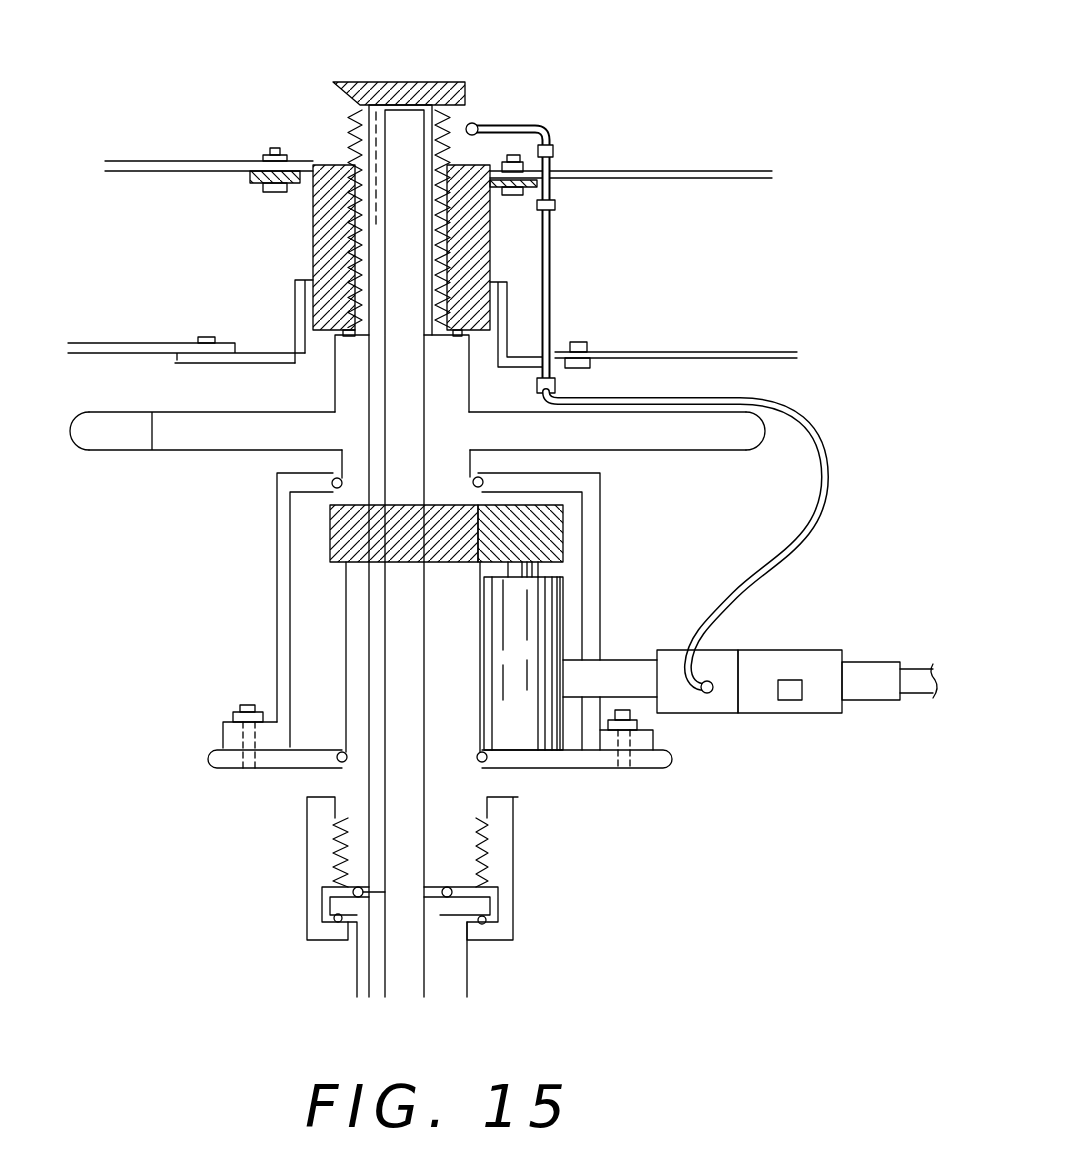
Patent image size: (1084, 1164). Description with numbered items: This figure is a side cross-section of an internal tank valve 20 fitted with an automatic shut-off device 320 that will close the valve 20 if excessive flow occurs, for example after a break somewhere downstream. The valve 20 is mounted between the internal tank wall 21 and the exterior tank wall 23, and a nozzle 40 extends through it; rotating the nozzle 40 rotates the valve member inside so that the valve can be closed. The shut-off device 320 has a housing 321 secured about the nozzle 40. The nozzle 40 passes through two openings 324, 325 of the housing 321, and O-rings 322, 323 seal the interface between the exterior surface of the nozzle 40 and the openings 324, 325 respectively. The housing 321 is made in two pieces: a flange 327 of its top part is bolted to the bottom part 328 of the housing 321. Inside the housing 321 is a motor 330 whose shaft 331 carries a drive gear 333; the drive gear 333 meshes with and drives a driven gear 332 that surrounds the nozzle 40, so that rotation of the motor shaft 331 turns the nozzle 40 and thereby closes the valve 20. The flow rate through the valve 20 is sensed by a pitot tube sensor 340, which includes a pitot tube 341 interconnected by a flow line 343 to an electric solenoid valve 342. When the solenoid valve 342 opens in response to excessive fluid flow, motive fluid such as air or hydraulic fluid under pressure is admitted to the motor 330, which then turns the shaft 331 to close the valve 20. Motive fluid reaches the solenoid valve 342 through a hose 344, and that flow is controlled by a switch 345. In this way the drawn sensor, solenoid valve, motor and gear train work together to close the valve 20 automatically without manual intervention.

The internal valve 20 is at (350, 128).
The internal tank wall 21 is at (697, 172).
The exterior tank wall 23 is at (697, 352).
The nozzle 40 is at (390, 605).
The shut-off device 320 is at (322, 660).
The housing 321 is at (277, 550).
The O-ring 322 is at (330, 483).
The O-ring 323 is at (345, 765).
The opening 324 is at (335, 478).
The opening 325 is at (483, 765).
The flange 327 is at (220, 730).
The bottom part 328 is at (275, 770).
The motor 330 is at (537, 620).
The shaft 331 is at (545, 567).
The driven gear 332 is at (330, 543).
The drive gear 333 is at (560, 515).
The pitot tube sensor 340 is at (558, 170).
The pitot tube 341 is at (508, 122).
The electric solenoid valve 342 is at (722, 702).
The flow line 343 is at (558, 283).
The hose 344 is at (867, 662).
The switch 345 is at (820, 707).